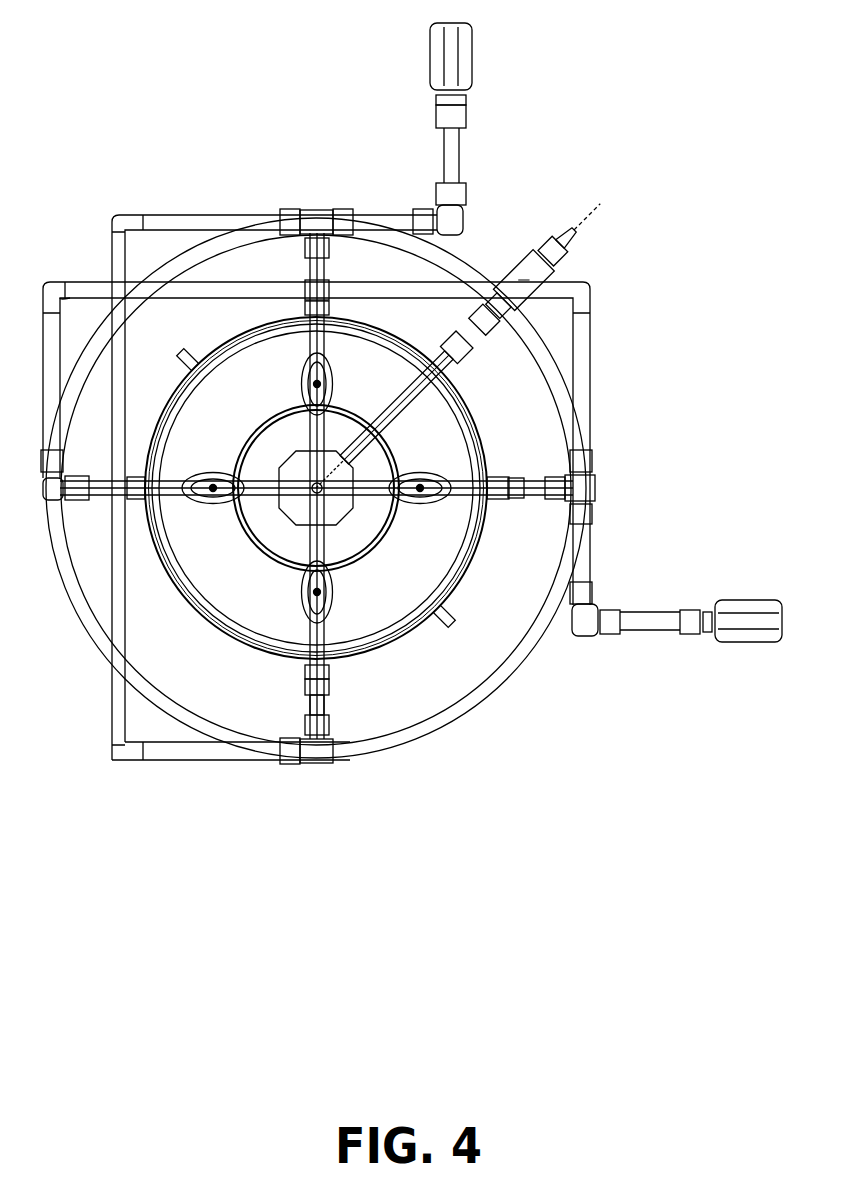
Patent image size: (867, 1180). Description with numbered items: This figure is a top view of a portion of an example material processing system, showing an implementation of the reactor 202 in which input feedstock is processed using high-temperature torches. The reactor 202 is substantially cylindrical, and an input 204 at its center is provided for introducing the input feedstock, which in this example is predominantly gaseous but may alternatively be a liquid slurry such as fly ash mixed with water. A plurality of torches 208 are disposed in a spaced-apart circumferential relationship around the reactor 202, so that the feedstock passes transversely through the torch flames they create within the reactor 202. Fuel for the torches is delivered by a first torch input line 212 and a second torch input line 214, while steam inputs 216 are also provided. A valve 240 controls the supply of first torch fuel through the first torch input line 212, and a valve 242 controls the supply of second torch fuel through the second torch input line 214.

The reactor 202 is at (483, 703).
The input 204 is at (312, 491).
The torches 208 is at (300, 380).
The first torch input line 212 is at (185, 215).
The second torch input line 214 is at (592, 345).
The steam input 216 is at (517, 500).
The valve 240 is at (476, 50).
The valve 242 is at (745, 600).